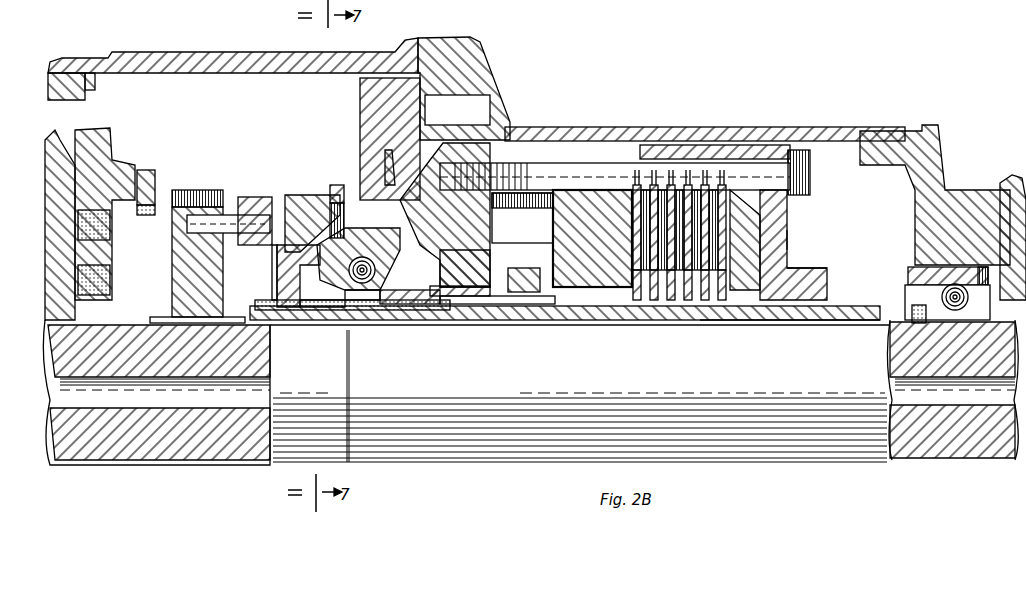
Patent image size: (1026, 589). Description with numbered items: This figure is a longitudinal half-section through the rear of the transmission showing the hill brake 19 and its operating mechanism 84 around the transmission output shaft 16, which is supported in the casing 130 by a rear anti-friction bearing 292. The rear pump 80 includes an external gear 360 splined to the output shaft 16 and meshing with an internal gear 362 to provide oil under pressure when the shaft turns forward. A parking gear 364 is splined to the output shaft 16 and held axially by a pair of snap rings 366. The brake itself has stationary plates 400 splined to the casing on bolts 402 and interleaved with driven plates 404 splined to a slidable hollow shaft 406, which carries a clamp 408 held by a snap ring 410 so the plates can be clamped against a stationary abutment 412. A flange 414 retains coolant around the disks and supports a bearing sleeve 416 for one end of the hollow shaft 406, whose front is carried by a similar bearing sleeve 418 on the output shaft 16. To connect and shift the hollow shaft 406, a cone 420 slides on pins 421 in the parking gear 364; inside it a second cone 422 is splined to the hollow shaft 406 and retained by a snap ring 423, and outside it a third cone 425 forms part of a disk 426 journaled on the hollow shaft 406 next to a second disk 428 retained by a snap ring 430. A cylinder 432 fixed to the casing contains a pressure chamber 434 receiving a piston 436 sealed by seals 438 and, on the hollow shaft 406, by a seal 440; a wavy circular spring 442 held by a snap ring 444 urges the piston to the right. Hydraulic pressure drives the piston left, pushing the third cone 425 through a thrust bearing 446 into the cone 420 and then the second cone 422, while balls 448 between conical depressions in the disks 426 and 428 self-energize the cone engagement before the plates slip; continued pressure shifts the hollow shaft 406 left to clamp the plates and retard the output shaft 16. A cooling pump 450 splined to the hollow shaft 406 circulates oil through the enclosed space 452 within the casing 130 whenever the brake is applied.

The transmission output shaft 16 is at (70, 350).
The hill brake 19 is at (792, 238).
The rear pump 80 is at (118, 159).
The operating mechanism 84 is at (358, 120).
The casing 130 is at (985, 200).
The rear anti-friction bearing 292 is at (935, 294).
The external gear 360 is at (78, 290).
The internal gear 362 is at (75, 225).
The parking gear 364 is at (193, 185).
The snap rings 366 is at (172, 316).
The stationary plates 400 is at (700, 140).
The bolts or studs 402 is at (758, 167).
The driven plates 404 is at (680, 300).
The hollow shaft 406 is at (820, 310).
The clamp 408 is at (745, 225).
The snap ring 410 is at (750, 320).
The stationary abutment 412 is at (590, 287).
The flange 414 is at (787, 260).
The bearing sleeve 416 is at (830, 298).
The bearing sleeve 418 is at (290, 312).
The cone 420 is at (250, 210).
The pins 421 is at (238, 225).
The second cone 422 is at (280, 252).
The snap ring 423 is at (272, 290).
The third cone 425 is at (292, 195).
The disk or web 426 is at (322, 308).
The second disk 428 is at (405, 305).
The snap ring 430 is at (372, 300).
The cylinder 432 is at (505, 130).
The pressure chamber 434 is at (445, 215).
The piston 436 is at (430, 258).
The seals 438 is at (395, 183).
The seal 440 is at (465, 306).
The wavy circular spring 442 is at (330, 205).
The snap ring 444 is at (332, 185).
The thrust bearing 446 is at (380, 236).
The balls 448 is at (362, 290).
The cooling pump 450 is at (515, 262).
The space 452 is at (790, 190).